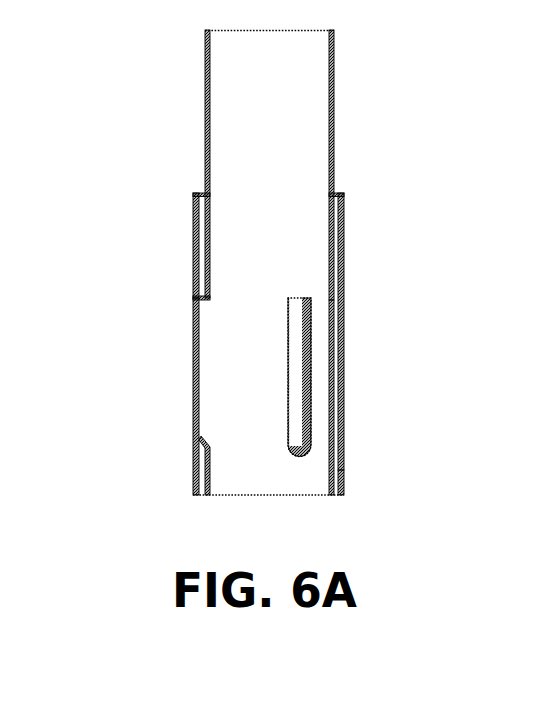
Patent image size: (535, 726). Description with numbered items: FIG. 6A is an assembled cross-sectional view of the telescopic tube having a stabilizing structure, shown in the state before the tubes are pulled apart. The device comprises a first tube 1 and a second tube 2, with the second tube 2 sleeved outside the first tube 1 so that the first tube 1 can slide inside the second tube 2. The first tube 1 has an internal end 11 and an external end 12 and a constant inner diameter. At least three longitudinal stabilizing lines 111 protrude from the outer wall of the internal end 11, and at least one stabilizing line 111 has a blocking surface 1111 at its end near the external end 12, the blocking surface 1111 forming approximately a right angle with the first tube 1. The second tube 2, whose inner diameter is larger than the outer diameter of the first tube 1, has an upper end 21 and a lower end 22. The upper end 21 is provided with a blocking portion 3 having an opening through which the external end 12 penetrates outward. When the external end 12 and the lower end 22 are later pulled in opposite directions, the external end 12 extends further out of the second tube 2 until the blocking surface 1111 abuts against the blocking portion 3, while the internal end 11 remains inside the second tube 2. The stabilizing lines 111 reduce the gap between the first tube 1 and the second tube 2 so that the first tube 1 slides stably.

The first tube 1 is at (162, 103).
The second tube 2 is at (87, 397).
The blocking portion 3 is at (198, 192).
The internal end 11 is at (333, 418).
The external end 12 is at (334, 87).
The upper end 21 is at (343, 250).
The lower end 22 is at (343, 460).
The longitudinal stabilizing line 111 is at (194, 366).
The blocking surface 1111 is at (193, 287).